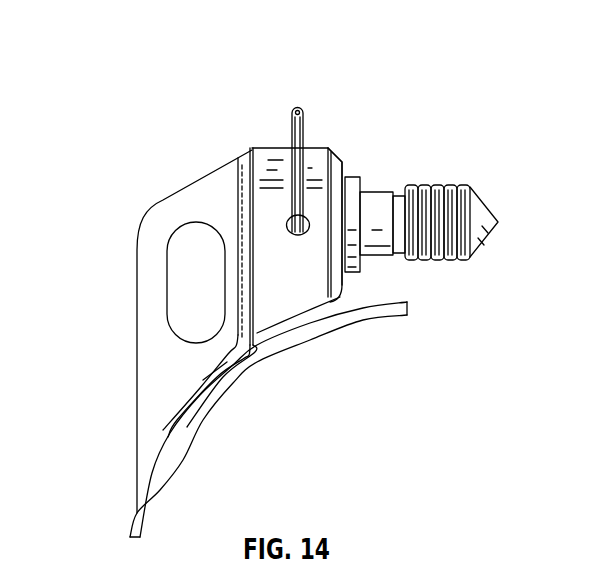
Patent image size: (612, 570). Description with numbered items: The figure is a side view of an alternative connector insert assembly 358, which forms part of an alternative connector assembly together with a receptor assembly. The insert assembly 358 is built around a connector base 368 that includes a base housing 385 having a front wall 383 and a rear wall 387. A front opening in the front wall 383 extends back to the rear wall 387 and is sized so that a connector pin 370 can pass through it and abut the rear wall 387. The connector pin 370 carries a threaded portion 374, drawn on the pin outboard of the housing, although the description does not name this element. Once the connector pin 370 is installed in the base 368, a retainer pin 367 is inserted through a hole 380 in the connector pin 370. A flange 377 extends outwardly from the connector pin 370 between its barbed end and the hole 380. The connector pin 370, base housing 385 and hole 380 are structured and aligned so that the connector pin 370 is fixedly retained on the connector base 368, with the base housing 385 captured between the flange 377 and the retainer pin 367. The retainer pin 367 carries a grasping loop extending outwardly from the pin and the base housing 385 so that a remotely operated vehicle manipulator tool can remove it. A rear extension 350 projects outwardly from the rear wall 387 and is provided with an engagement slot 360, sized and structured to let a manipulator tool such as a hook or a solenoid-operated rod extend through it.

The connector insert assembly 358 is at (130, 105).
The rear extension 350 is at (163, 223).
The rear wall 387 is at (238, 193).
The engagement slot 360 is at (192, 280).
The connector base 368 is at (157, 392).
The base housing 385 is at (283, 300).
The front wall 383 is at (342, 162).
The retainer pin 367 is at (297, 105).
The hole 380 is at (305, 232).
The flange 377 is at (350, 187).
The threaded shaft 374 is at (450, 187).
The connector pin 370 is at (480, 205).